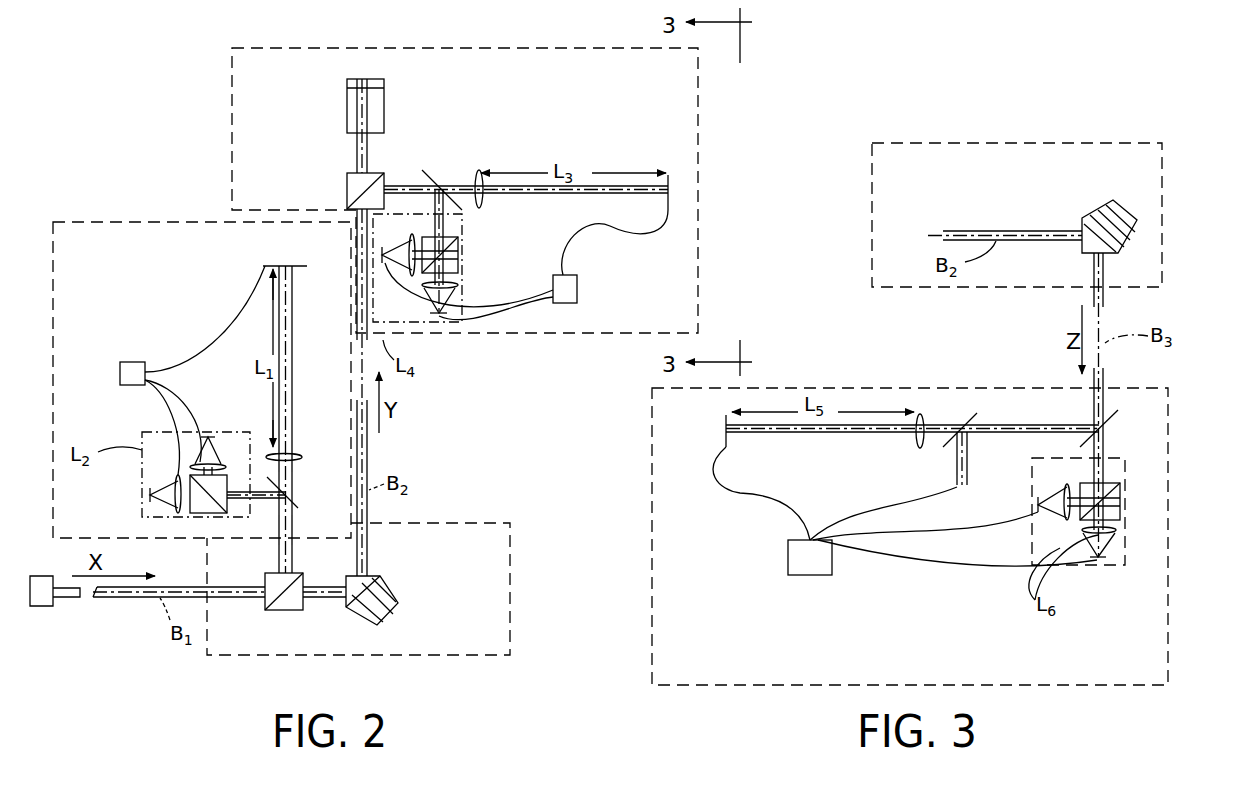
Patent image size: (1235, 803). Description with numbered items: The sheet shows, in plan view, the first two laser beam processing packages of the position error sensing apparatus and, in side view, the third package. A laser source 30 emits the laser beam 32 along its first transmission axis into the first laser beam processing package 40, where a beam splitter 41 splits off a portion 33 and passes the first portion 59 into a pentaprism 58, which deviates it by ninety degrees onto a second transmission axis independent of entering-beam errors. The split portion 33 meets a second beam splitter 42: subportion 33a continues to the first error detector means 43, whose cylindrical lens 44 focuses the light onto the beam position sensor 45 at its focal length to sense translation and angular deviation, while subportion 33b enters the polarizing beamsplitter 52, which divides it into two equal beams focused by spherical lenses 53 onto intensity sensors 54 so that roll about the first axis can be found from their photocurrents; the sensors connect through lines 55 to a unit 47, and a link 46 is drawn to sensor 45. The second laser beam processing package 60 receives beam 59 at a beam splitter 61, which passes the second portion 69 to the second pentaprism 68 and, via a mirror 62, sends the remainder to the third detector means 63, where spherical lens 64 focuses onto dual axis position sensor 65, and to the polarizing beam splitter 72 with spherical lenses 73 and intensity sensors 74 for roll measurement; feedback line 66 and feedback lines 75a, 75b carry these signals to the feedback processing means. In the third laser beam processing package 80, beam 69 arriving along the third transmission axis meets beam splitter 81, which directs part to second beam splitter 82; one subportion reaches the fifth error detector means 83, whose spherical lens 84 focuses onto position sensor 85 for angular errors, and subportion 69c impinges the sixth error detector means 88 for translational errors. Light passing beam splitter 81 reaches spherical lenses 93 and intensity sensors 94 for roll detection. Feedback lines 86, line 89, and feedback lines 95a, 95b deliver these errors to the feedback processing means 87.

In FIG. 2, the laser source 30 is at (48, 608).
In FIG. 2, the laser beam 32 is at (108, 600).
In FIG. 2, the portion of beam 33 is at (294, 548).
In FIG. 2, the subportion of beam 33a is at (294, 468).
In FIG. 2, the second subportion of beam 33b is at (278, 520).
In FIG. 2, the first laser beam processing package 40 is at (408, 519).
In FIG. 2, the beam splitter 41 is at (290, 602).
In FIG. 2, the second beam splitter 42 is at (298, 496).
In FIG. 2, the first error detector means 43 is at (299, 384).
In FIG. 2, the cylindrical lens 44 is at (303, 446).
In FIG. 2, the beam position sensor 45 is at (299, 265).
In FIG. 2, the servo link 46 is at (243, 312).
In FIG. 2, the drive unit 47 is at (130, 370).
In FIG. 2, the polarizing beamsplitter 52 is at (204, 520).
In FIG. 2, the spherical lenses 53 is at (247, 445).
In FIG. 2, the intensity sensors 54 is at (150, 495).
In FIG. 2, the signal lines 55 is at (157, 396).
In FIG. 2, the pentaprism 58 is at (396, 604).
In FIG. 2, the first portion of beam 59 is at (369, 548).
In FIG. 3, the first portion of beam 59 is at (1038, 228).
In FIG. 2, the second laser beam processing package 60 is at (541, 338).
In FIG. 2, the beam splitter 61 is at (349, 190).
In FIG. 2, the mirror 62 is at (446, 174).
In FIG. 2, the third detector means 63 is at (570, 135).
In FIG. 2, the spherical lens 64 is at (478, 170).
In FIG. 2, the dual axis position sensor 65 is at (670, 174).
In FIG. 2, the feedback line 66 is at (604, 228).
In FIG. 2, the second pentaprism 68 is at (349, 110).
In FIG. 3, the second pentaprism 68 is at (1122, 213).
In FIG. 2, the second portion of beam 69 is at (358, 151).
In FIG. 3, the second portion of beam 69 is at (1093, 268).
In FIG. 2, the polarizing beam splitter 72 is at (448, 262).
In FIG. 2, the spherical lenses 73 is at (430, 236).
In FIG. 2, the intensity sensors 74 is at (385, 246).
In FIG. 2, the feedback line 75a is at (556, 319).
In FIG. 2, the feedback line 75b is at (524, 305).
In FIG. 3, the third laser beam processing package 80 is at (866, 385).
In FIG. 3, the beam splitter 81 is at (1118, 418).
In FIG. 3, the second beam splitter 82 is at (962, 420).
In FIG. 3, the fifth error detector means 83 is at (846, 443).
In FIG. 3, the spherical lens 84 is at (929, 414).
In FIG. 3, the position sensor 85 is at (724, 420).
In FIG. 3, the feedback lines 86 is at (722, 495).
In FIG. 3, the feedback processing means 87 is at (802, 560).
In FIG. 3, the sixth error detector means 88 is at (970, 484).
In FIG. 3, the line 89 is at (868, 510).
In FIG. 3, the spherical lenses 93 is at (1100, 535).
In FIG. 3, the intensity sensors 94 is at (1040, 502).
In FIG. 3, the feedback line 95a is at (946, 527).
In FIG. 3, the feedback line 95b is at (906, 542).
In FIG. 3, the subportion of beam 69c is at (955, 467).